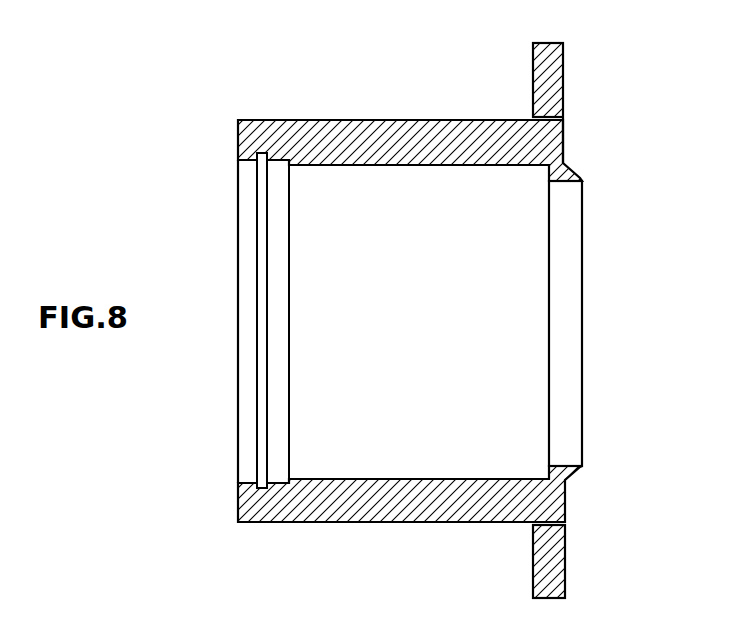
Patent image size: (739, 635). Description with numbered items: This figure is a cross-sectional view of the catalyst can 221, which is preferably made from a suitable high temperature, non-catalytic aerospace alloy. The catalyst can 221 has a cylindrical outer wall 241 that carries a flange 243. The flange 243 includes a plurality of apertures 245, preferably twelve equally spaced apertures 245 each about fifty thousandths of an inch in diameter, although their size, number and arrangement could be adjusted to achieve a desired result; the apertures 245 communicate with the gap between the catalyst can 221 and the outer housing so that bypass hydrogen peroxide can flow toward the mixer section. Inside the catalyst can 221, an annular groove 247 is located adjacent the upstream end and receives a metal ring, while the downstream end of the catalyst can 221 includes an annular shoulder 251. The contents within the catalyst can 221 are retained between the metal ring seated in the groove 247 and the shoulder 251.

The catalyst can 221 is at (397, 299).
The cylindrical outer wall 241 is at (400, 122).
The flange 243 is at (545, 53).
The apertures 245 is at (564, 118).
The annular groove 247 is at (260, 160).
The annular shoulder 251 is at (547, 467).